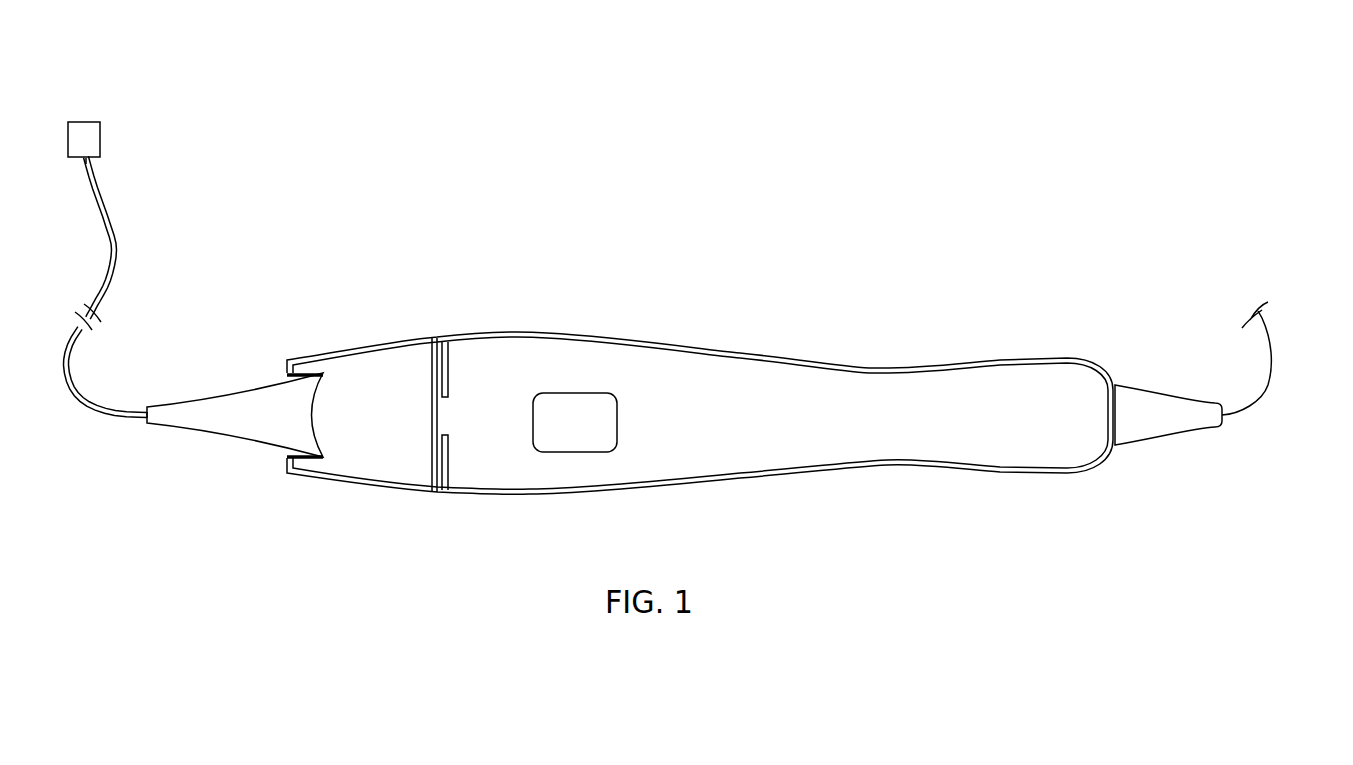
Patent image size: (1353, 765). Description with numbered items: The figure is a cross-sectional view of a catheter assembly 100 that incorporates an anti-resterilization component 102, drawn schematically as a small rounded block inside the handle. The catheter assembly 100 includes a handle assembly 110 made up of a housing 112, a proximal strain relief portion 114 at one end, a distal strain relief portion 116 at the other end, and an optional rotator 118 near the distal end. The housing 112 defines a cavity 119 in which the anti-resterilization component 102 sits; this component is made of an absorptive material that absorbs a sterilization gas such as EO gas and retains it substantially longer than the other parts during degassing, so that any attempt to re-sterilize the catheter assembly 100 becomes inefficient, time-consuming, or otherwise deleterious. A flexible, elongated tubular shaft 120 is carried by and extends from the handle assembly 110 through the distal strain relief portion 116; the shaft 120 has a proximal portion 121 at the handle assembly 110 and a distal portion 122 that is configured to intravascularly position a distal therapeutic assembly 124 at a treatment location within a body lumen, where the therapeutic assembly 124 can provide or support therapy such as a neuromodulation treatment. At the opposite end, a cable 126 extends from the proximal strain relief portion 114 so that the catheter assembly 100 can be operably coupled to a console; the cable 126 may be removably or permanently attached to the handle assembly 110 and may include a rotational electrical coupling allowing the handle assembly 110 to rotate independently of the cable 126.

The catheter assembly 100 is at (745, 182).
The anti-resterilization component 102 is at (575, 422).
The handle assembly 110 is at (640, 334).
The housing 112 is at (808, 362).
The proximal strain relief portion 114 is at (1168, 422).
The distal strain relief portion 116 is at (190, 422).
The rotator 118 is at (340, 348).
The cavity 119 is at (770, 430).
The tubular shaft 120 is at (118, 277).
The proximal portion 121 is at (136, 407).
The distal portion 122 is at (92, 170).
The distal therapeutic assembly 124 is at (100, 140).
The cable 126 is at (1265, 392).